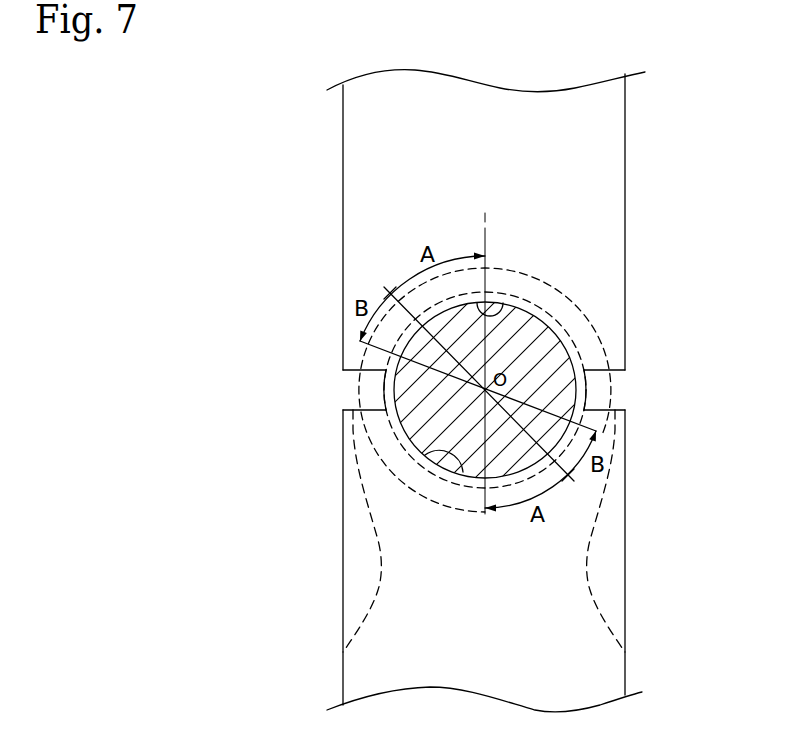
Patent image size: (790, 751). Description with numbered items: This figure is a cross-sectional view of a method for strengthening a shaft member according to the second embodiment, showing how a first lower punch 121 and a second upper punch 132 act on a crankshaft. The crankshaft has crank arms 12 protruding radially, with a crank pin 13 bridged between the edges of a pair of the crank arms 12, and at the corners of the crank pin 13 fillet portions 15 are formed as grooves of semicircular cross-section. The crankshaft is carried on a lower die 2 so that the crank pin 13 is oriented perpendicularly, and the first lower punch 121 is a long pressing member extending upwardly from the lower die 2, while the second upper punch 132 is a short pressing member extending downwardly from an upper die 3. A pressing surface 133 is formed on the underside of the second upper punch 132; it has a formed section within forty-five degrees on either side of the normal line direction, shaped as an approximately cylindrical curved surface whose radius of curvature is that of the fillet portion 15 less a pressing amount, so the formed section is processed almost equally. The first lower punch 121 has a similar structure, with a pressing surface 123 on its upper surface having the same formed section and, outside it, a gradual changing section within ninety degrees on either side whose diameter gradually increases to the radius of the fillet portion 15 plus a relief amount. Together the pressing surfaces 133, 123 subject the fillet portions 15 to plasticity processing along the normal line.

The lower die 2 is at (343, 600).
The upper die 3 is at (343, 187).
The crank arm 12 is at (362, 445).
The crank pin 13 is at (588, 383).
The fillet portion 15 is at (587, 402).
The first lower punch 121 is at (610, 582).
The pressing surface 123 is at (426, 457).
The second upper punch 132 is at (605, 215).
The pressing surface 133 is at (501, 302).